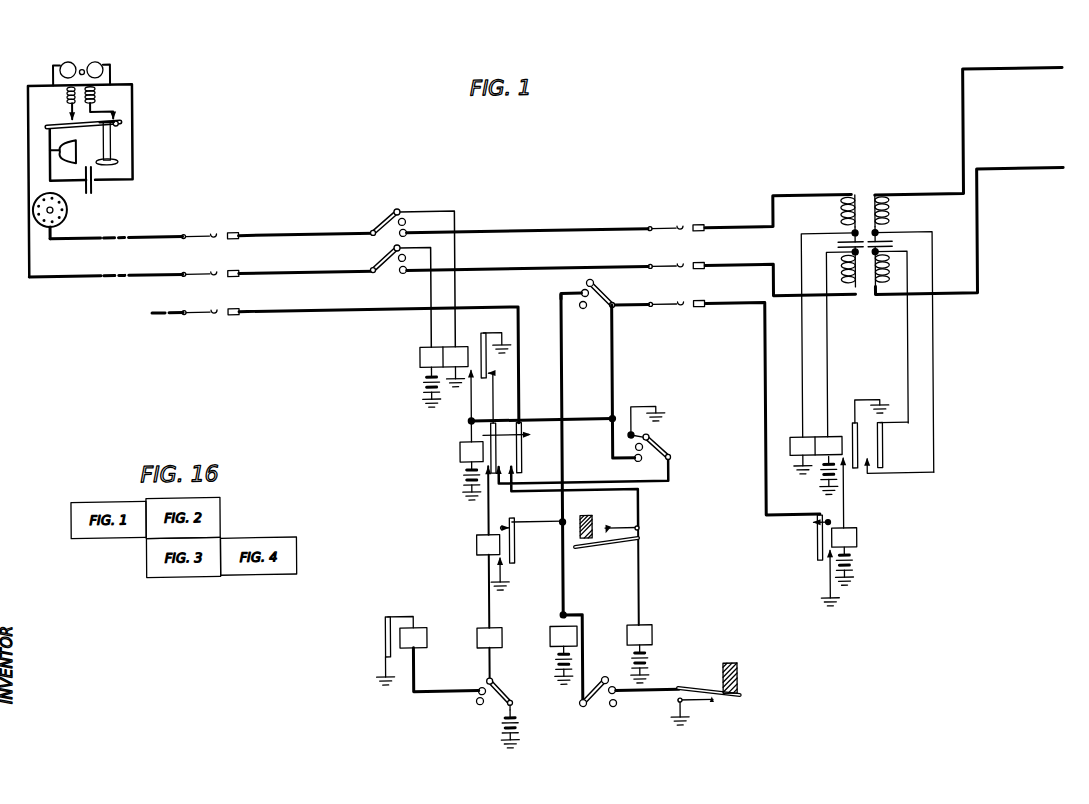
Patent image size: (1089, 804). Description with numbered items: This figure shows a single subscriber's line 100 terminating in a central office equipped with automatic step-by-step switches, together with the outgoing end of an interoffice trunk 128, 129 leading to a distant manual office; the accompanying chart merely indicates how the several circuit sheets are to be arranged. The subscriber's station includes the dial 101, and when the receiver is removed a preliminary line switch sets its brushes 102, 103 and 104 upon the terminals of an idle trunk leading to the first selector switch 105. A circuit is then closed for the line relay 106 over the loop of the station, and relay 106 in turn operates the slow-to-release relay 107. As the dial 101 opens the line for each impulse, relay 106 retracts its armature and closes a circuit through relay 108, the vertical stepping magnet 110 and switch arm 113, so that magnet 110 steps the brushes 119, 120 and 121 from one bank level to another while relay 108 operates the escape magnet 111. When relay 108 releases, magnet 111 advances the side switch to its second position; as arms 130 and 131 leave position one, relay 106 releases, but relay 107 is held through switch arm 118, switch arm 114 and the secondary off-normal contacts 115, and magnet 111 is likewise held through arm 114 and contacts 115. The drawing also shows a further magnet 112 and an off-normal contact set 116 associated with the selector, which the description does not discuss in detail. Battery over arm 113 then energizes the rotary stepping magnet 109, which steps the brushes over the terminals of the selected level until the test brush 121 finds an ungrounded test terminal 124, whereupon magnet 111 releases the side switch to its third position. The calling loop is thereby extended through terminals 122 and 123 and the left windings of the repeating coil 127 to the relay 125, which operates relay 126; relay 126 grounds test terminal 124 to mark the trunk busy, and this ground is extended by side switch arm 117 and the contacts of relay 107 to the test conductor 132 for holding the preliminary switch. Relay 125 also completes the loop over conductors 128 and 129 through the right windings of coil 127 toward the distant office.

The subscriber's line 100 is at (124, 102).
The dial 101 is at (68, 207).
The line switch brush 102 is at (193, 230).
The line switch brush 103 is at (193, 268).
The line switch brush 104 is at (193, 306).
The first selector switch 105 is at (527, 239).
The line relay 106 is at (420, 356).
The slow-to-release relay 107 is at (459, 451).
The relay 108 is at (475, 544).
The rotary stepping magnet 109 is at (416, 625).
The vertical stepping magnet 110 is at (475, 636).
The escape magnet 111 is at (548, 637).
The return magnet RET. 112 is at (650, 640).
The switch arm 113 is at (497, 688).
The switch arm 114 is at (588, 704).
The secondary off-normal contacts 115 is at (725, 702).
The off-normal switch P.O.N. 116 is at (591, 549).
The side switch arm 117 is at (663, 446).
The switch arm 118 is at (602, 310).
The brush 119 is at (662, 228).
The brush 120 is at (662, 266).
The test brush 121 is at (662, 305).
The terminal 122 is at (702, 226).
The terminal 123 is at (702, 266).
The test terminal 124 is at (702, 306).
The relay 125 is at (789, 451).
The relay 126 is at (855, 544).
The repeating coil 127 is at (868, 201).
The trunk conductor 128 is at (1039, 79).
The trunk conductor 129 is at (1029, 176).
The side switch arm 130 is at (372, 215).
The side switch arm 131 is at (372, 251).
The test conductor 132 is at (258, 309).